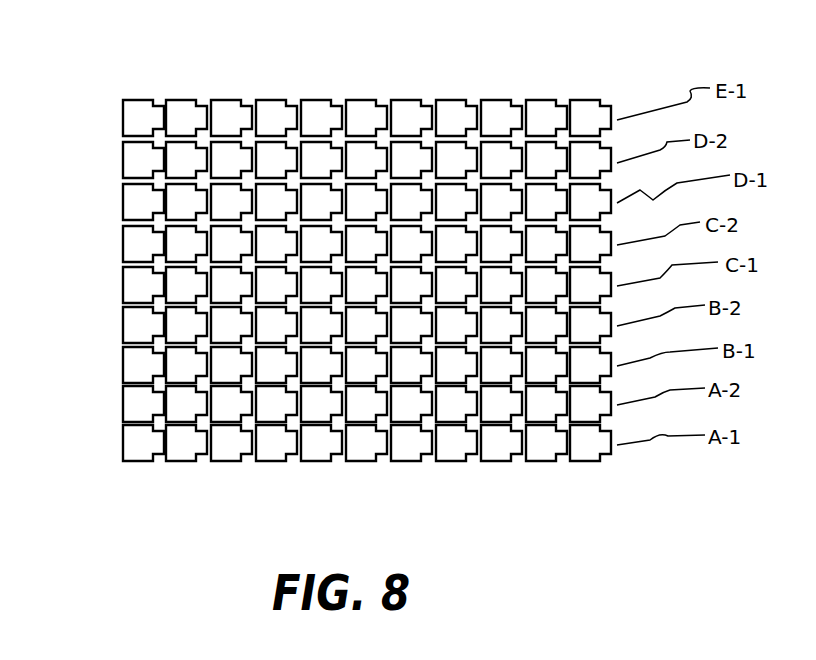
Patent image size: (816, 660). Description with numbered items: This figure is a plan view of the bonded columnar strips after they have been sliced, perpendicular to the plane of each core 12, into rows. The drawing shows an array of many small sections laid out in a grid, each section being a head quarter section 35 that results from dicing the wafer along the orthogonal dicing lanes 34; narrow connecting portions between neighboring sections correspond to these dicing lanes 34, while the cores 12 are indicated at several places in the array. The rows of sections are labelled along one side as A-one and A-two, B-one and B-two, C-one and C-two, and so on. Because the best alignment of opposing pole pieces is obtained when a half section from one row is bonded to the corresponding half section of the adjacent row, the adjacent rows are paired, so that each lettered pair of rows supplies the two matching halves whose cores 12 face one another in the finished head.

The core 12 is at (615, 117).
The dicing lane 34 is at (160, 416).
The head quarter section 35 is at (138, 245).